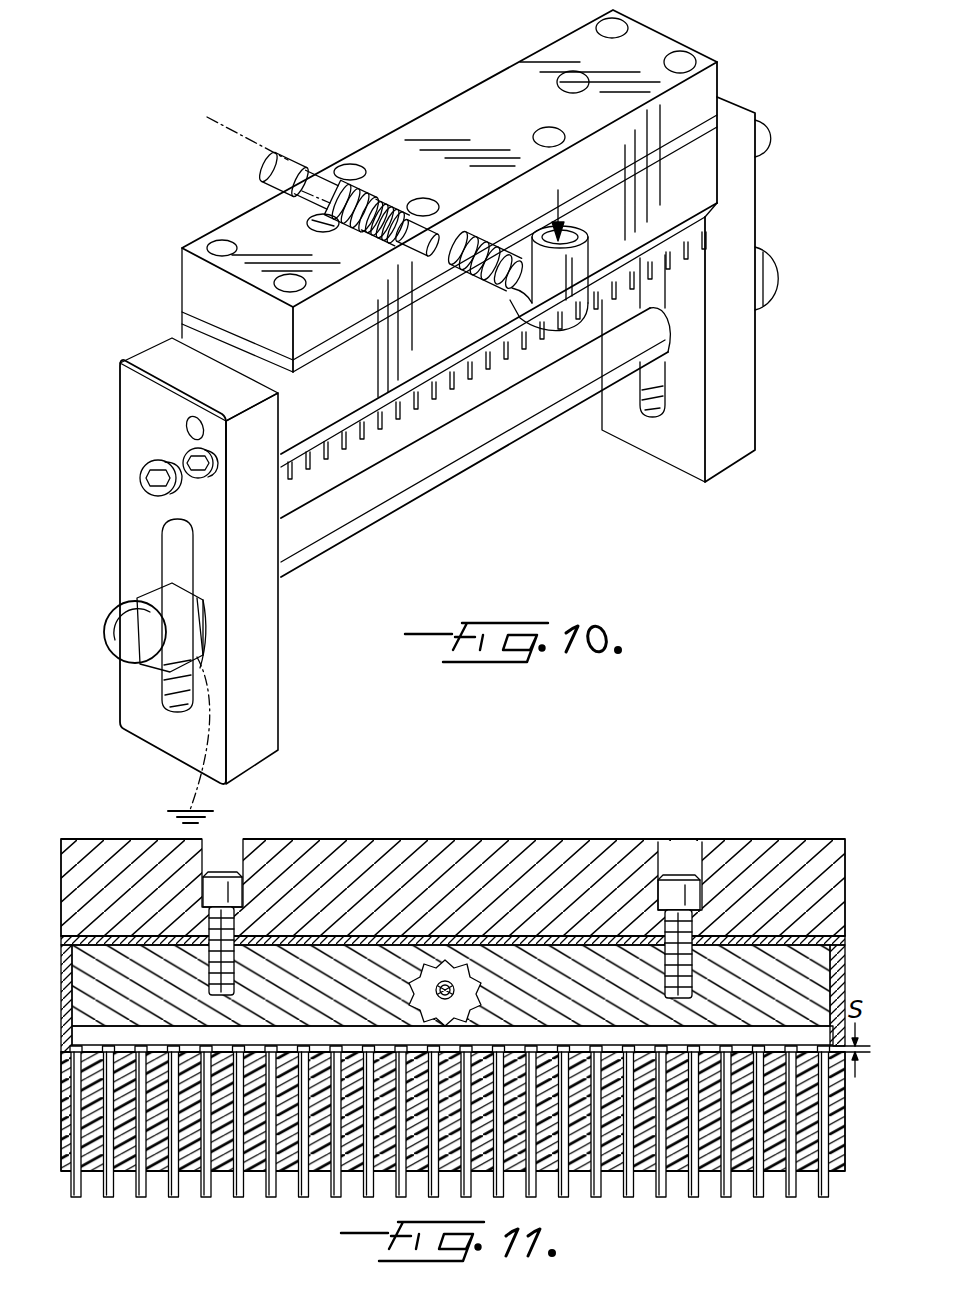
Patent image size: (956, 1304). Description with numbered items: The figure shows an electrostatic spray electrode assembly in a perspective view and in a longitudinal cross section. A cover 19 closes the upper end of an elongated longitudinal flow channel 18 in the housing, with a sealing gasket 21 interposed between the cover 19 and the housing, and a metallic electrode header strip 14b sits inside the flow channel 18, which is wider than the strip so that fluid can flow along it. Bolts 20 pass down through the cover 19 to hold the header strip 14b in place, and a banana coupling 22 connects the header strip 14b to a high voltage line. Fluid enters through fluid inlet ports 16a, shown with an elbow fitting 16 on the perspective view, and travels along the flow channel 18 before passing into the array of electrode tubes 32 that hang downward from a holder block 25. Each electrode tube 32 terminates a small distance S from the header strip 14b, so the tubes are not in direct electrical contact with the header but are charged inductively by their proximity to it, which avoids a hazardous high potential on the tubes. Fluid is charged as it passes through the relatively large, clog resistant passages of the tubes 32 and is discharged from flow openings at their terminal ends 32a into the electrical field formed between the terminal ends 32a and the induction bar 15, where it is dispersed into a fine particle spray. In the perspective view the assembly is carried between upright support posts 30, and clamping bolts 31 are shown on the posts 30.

In FIG. 11, the electrode header strip 14b is at (350, 953).
In FIG. 10, the induction bar 15 is at (513, 420).
In FIG. 10, the elbow fitting 16 is at (520, 297).
In FIG. 10, the fluid inlet ports 16a is at (480, 240).
In FIG. 11, the longitudinal flow channel 18 is at (313, 1038).
In FIG. 10, the cover 19 is at (227, 230).
In FIG. 11, the cover 19 is at (378, 843).
In FIG. 10, the bolts 20 is at (313, 218).
In FIG. 11, the bolts 20 is at (227, 876).
In FIG. 10, the sealing gasket 21 is at (203, 312).
In FIG. 11, the sealing gasket 21 is at (535, 942).
In FIG. 10, the banana coupling 22 is at (393, 193).
In FIG. 11, the banana coupling 22 is at (445, 980).
In FIG. 10, the pin holder block 25 is at (417, 367).
In FIG. 11, the pin holder block 25 is at (643, 1158).
In FIG. 10, the support posts 30 is at (743, 388).
In FIG. 10, the clamping bolts 31 is at (163, 680).
In FIG. 10, the electrode tubes 32 is at (364, 443).
In FIG. 11, the electrode tubes 32 is at (107, 1183).
In FIG. 11, the terminal ends 32a is at (300, 1197).